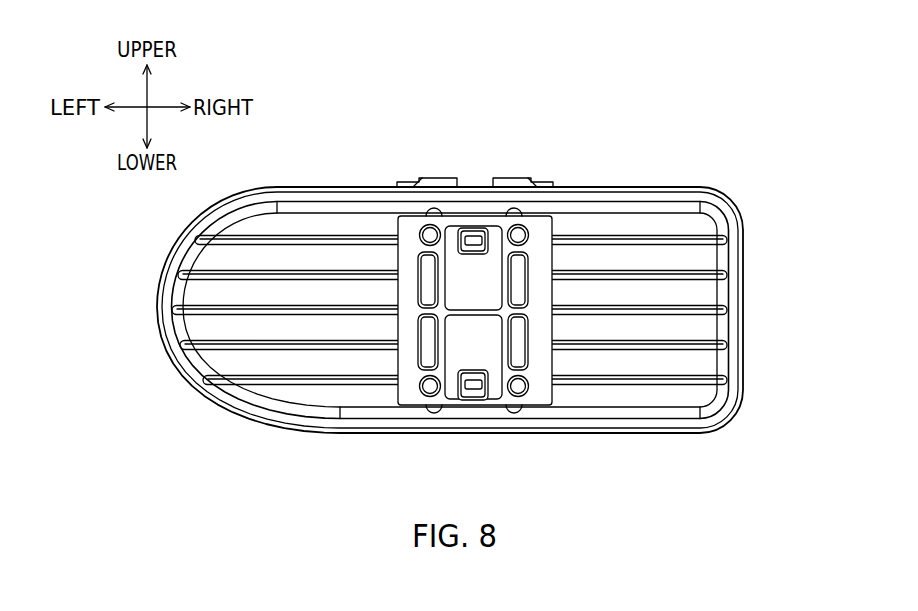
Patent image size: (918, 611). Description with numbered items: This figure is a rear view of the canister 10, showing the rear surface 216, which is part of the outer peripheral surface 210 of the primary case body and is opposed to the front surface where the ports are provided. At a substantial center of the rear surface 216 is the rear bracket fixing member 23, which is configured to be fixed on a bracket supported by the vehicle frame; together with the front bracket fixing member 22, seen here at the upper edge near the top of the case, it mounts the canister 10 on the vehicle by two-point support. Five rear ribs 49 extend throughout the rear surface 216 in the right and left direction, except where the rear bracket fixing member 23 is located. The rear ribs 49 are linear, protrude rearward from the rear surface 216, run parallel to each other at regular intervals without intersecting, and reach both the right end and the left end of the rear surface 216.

The canister 10 is at (737, 163).
The front bracket fixing member 22 is at (520, 178).
The rear bracket fixing member 23 is at (408, 378).
The rear ribs 49 is at (172, 310).
The rear surface 216 is at (310, 327).
The outer peripheral surface 210 is at (294, 508).